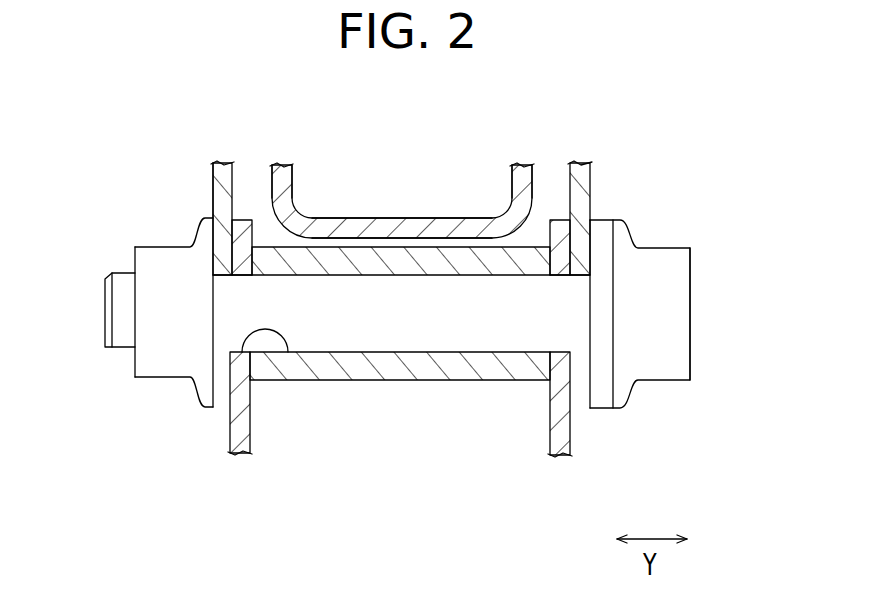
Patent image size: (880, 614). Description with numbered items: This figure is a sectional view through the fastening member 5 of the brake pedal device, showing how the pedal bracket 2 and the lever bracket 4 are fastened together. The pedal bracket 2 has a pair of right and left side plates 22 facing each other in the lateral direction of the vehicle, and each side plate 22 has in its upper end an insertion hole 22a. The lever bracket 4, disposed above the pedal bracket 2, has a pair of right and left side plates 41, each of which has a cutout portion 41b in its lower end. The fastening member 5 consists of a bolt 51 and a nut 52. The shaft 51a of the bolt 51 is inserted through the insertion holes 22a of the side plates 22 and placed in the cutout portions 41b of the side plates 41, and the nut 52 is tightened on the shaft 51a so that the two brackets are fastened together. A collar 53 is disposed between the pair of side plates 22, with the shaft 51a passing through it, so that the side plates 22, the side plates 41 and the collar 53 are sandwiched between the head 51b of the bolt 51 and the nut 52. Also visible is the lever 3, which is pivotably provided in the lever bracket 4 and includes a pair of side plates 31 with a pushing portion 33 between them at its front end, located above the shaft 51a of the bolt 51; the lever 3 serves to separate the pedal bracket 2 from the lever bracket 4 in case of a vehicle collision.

The pedal bracket 2 is at (230, 421).
The side plates 22 is at (250, 440).
The insertion hole 22a is at (287, 352).
The lever 3 is at (430, 220).
The side plates 31 is at (285, 182).
The pushing portion 33 is at (373, 225).
The lever bracket 4 is at (213, 178).
The side plates 41 is at (232, 188).
The cutout portion 41b is at (213, 282).
The fastening member 5 is at (665, 230).
The bolt 51 is at (660, 365).
The shaft 51a is at (445, 328).
The head 51b is at (660, 310).
The nut 52 is at (150, 358).
The collar 53 is at (381, 372).